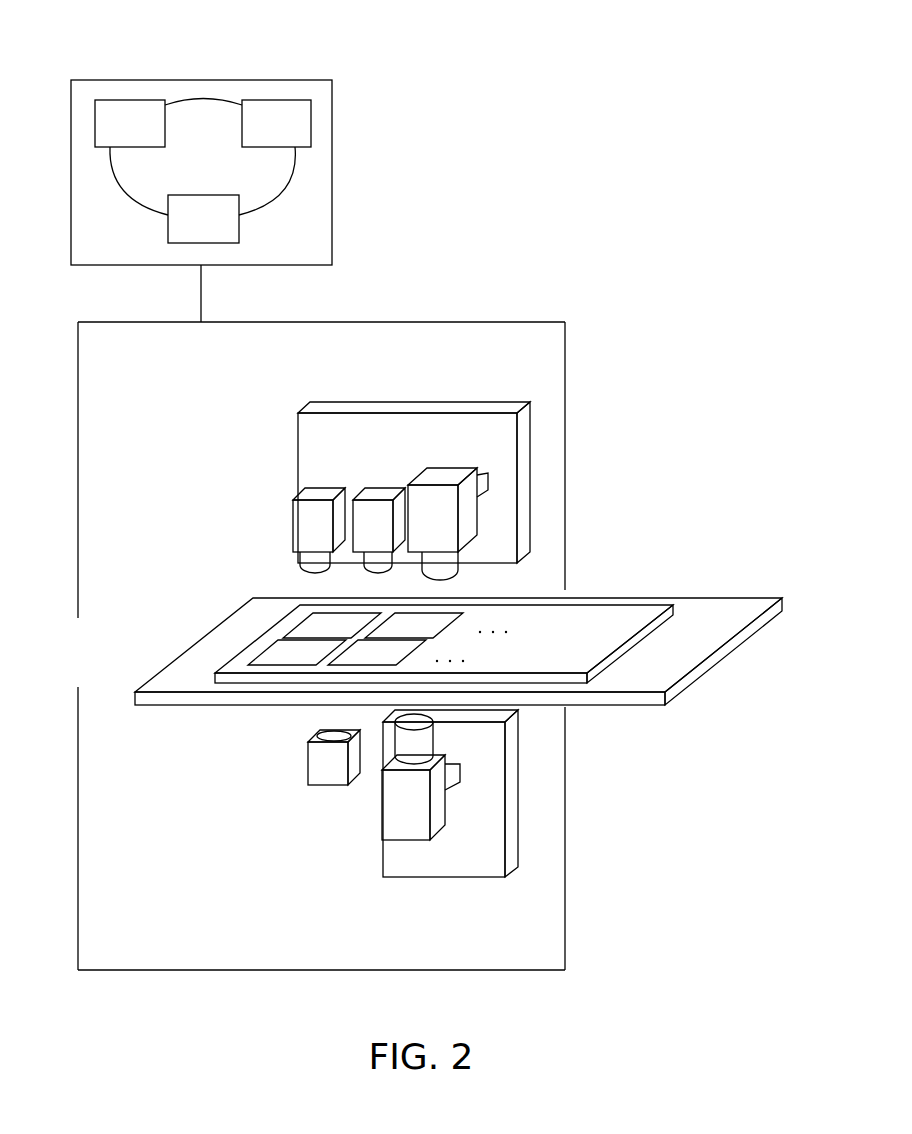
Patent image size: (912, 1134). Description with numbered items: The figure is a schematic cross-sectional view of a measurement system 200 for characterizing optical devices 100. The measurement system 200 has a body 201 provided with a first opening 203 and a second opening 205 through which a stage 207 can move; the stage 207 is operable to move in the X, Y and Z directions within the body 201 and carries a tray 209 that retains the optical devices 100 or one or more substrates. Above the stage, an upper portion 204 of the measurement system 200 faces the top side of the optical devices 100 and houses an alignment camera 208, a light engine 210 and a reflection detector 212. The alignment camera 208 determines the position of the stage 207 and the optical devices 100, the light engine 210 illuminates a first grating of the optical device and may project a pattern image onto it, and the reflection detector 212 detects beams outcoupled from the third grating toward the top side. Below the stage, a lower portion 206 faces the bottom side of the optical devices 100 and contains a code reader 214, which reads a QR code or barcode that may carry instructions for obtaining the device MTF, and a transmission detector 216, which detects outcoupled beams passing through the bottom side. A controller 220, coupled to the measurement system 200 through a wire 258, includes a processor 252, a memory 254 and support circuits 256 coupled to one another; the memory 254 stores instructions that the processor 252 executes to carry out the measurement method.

The optical devices 100 is at (282, 657).
The measurement system 200 is at (600, 232).
The body 201 is at (378, 646).
The first opening 203 is at (78, 618).
The upper portion 204 is at (166, 467).
The second opening 205 is at (476, 625).
The lower portion 206 is at (158, 860).
The stage 207 is at (708, 675).
The alignment camera 208 is at (322, 488).
The tray 209 is at (662, 630).
The light engine 210 is at (383, 490).
The reflection detector 212 is at (450, 468).
The code reader 214 is at (327, 777).
The transmission detector 216 is at (422, 813).
The controller 220 is at (185, 136).
The processor 252 is at (258, 135).
The memory 254 is at (184, 232).
The support circuits 256 is at (111, 135).
The wire 258 is at (201, 296).